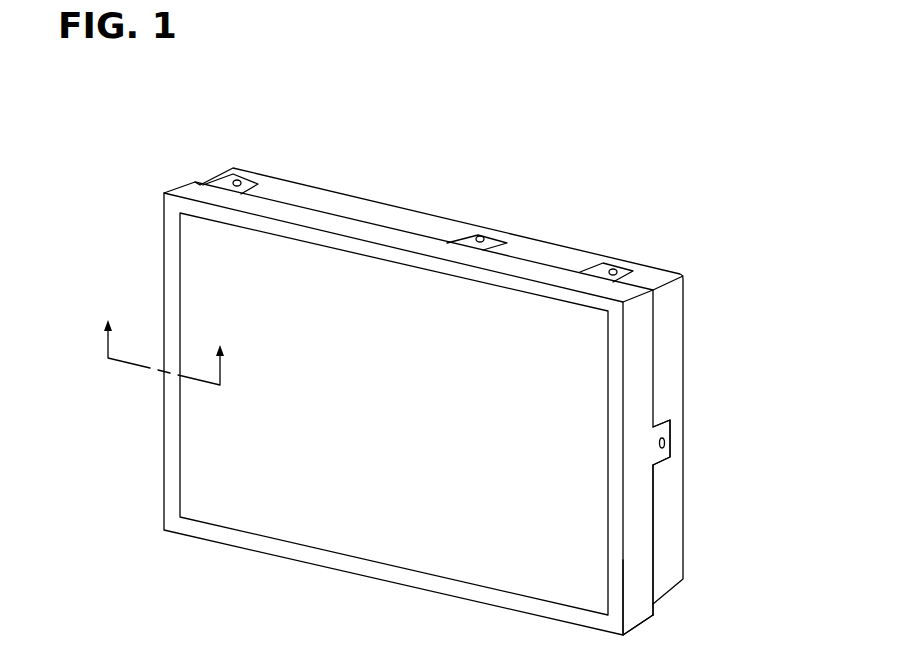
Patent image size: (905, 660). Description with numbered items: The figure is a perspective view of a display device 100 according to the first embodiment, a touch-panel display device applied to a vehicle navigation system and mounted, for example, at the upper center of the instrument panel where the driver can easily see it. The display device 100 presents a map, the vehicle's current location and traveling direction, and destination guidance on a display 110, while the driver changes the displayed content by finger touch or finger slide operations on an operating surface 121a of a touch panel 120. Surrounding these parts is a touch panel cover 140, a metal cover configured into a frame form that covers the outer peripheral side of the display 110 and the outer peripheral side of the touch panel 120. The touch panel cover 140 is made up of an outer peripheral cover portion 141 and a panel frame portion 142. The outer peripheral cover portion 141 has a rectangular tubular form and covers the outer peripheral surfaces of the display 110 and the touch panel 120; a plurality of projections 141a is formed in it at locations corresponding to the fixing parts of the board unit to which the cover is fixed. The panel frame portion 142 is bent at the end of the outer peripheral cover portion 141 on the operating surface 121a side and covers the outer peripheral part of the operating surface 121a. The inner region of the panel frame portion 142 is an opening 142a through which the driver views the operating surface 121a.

The display device 100 is at (247, 164).
The display 110 is at (286, 174).
The touch panel 120 is at (313, 263).
The operating surface 121a is at (370, 282).
The touch panel cover 140 is at (654, 340).
The outer peripheral cover portion 141 is at (633, 387).
The projection 141a is at (663, 421).
The panel frame portion 142 is at (615, 470).
The opening 142a is at (607, 507).